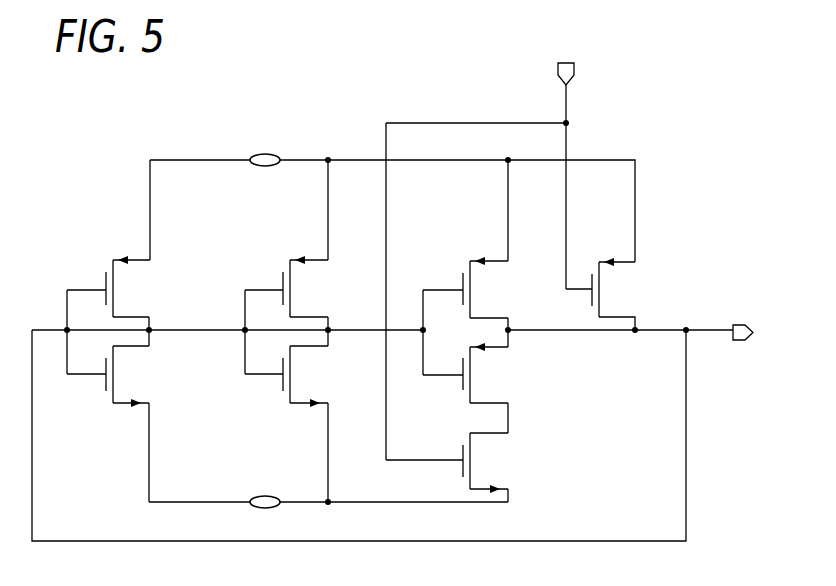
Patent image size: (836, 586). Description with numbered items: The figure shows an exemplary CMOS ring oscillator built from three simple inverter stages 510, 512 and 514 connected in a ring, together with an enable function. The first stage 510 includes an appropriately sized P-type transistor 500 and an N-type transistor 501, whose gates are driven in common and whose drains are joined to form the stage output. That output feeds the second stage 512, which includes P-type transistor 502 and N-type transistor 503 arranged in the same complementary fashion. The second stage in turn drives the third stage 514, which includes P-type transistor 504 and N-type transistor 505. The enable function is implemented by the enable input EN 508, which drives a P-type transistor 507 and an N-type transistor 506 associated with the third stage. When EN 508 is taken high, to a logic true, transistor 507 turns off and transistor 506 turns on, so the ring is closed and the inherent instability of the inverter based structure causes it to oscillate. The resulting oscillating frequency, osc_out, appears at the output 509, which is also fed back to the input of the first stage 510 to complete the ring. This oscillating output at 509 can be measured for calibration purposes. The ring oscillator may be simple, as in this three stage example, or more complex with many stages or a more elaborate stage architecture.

The P-type transistor 500 is at (116, 286).
The N-type transistor 501 is at (116, 376).
The P-type transistor 502 is at (294, 286).
The N-type transistor 503 is at (294, 376).
The P-type transistor 504 is at (473, 287).
The N-type transistor 505 is at (473, 373).
The N-type transistor 506 is at (454, 463).
The P-type transistor 507 is at (609, 294).
The enable input EN 508 is at (498, 247).
The output 509 is at (766, 335).
The first stage 510 is at (160, 145).
The second stage 512 is at (338, 142).
The third stage 514 is at (517, 120).